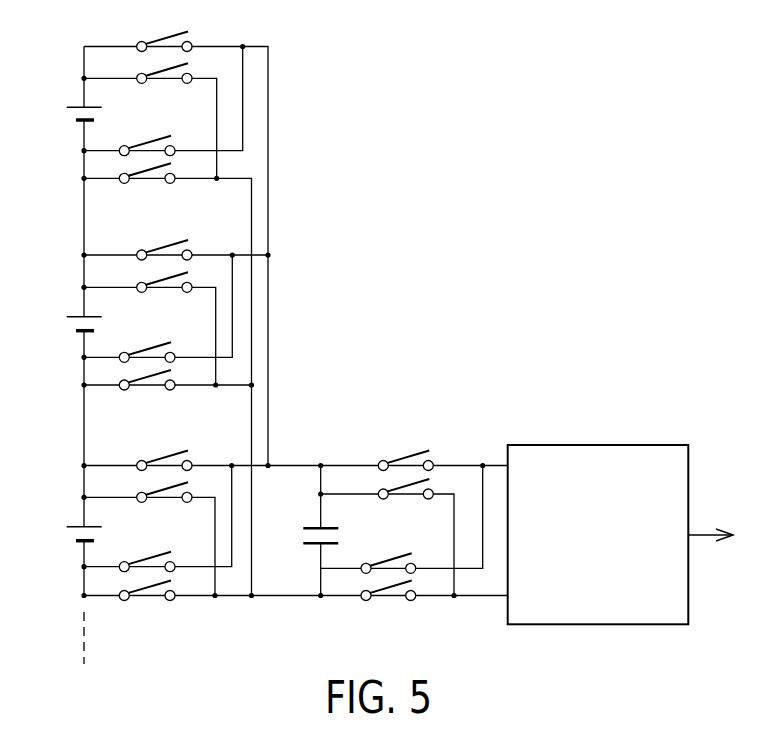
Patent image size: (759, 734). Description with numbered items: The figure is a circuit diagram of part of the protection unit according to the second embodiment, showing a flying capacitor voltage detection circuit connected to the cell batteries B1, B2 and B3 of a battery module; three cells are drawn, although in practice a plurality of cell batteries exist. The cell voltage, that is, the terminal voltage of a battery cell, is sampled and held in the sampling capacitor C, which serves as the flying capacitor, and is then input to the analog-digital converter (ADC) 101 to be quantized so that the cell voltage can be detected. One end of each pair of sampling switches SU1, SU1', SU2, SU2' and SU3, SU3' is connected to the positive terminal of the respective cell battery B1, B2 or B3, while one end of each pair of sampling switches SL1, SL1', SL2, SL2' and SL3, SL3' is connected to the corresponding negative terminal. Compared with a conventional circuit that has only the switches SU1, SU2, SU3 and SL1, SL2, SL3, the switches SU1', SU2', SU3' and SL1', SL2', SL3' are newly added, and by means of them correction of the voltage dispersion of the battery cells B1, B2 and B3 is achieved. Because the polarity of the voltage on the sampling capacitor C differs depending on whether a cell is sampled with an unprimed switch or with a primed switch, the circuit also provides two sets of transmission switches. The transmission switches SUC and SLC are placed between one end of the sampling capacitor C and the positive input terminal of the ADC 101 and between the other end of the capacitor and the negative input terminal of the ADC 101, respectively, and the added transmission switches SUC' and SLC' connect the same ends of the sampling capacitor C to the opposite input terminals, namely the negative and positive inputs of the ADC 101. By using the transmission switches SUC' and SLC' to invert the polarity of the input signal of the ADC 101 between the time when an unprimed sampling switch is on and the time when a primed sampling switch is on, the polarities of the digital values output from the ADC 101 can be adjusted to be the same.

The analog-digital converter (ADC) 101 is at (597, 445).
The cell battery B1 is at (67, 111).
The cell battery B2 is at (67, 321).
The cell battery B3 is at (66, 531).
The sampling capacitor C is at (309, 537).
The sampling switch SU1 is at (177, 29).
The sampling switch SU1' is at (168, 89).
The sampling switch SL1 is at (147, 189).
The sampling switch SL1' is at (142, 131).
The sampling switch SU2 is at (179, 238).
The sampling switch SU2' is at (164, 299).
The sampling switch SL2 is at (147, 394).
The sampling switch SL2' is at (141, 338).
The sampling switch SU3 is at (175, 449).
The sampling switch SU3' is at (164, 509).
The sampling switch SL3 is at (141, 607).
The sampling switch SL3' is at (141, 548).
The transmission switch SUC is at (424, 450).
The transmission switch SUC' is at (405, 506).
The transmission switch SLC is at (388, 606).
The transmission switch SLC' is at (383, 549).